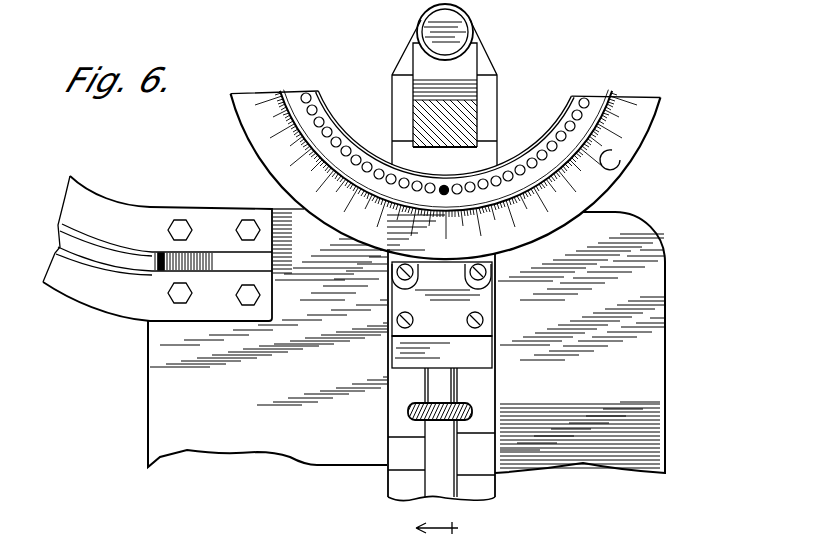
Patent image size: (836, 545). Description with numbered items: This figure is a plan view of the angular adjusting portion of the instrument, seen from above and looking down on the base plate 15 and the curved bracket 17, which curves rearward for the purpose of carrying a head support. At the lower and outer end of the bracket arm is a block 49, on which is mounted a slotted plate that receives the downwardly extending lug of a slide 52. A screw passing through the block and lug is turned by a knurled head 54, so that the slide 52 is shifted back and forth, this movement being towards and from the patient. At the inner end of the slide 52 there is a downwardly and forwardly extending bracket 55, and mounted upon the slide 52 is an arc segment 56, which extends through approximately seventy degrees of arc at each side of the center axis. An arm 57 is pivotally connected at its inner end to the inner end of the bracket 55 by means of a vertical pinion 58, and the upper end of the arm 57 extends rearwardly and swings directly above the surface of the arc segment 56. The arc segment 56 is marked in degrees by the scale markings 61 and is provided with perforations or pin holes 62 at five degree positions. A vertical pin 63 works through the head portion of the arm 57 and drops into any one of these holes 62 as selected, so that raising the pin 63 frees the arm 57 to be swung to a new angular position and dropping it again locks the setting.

The base plate 15 is at (421, 341).
The bracket 17 is at (98, 217).
The block 49 is at (407, 388).
The slide 52 is at (442, 315).
The knurled head 54 is at (472, 410).
The bracket 55 is at (486, 89).
The arc segment 56 is at (647, 125).
The arm 57 is at (460, 66).
The vertical pinion 58 is at (452, 23).
The scale markings 61 is at (600, 165).
The perforations or pin holes 62 is at (329, 129).
The vertical pin 63 is at (445, 187).